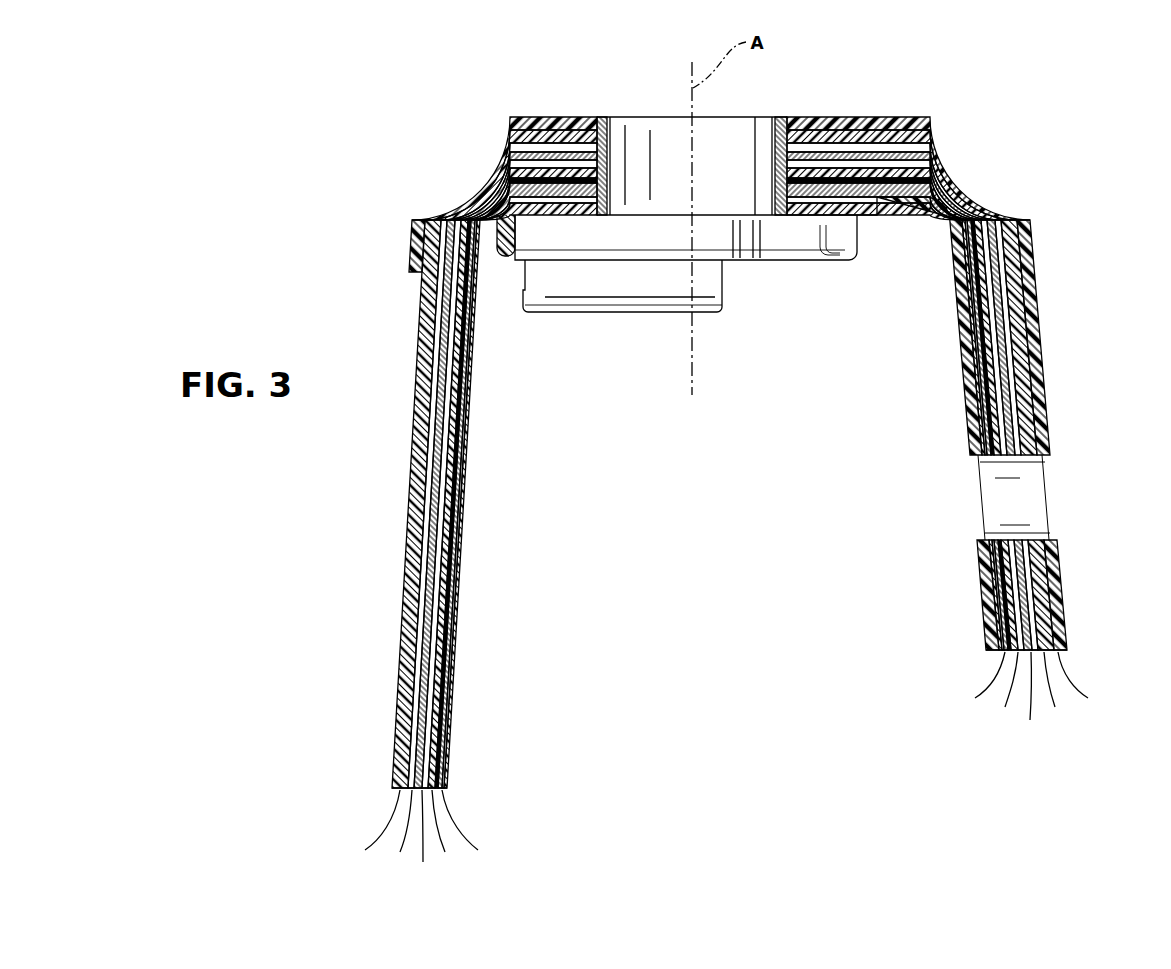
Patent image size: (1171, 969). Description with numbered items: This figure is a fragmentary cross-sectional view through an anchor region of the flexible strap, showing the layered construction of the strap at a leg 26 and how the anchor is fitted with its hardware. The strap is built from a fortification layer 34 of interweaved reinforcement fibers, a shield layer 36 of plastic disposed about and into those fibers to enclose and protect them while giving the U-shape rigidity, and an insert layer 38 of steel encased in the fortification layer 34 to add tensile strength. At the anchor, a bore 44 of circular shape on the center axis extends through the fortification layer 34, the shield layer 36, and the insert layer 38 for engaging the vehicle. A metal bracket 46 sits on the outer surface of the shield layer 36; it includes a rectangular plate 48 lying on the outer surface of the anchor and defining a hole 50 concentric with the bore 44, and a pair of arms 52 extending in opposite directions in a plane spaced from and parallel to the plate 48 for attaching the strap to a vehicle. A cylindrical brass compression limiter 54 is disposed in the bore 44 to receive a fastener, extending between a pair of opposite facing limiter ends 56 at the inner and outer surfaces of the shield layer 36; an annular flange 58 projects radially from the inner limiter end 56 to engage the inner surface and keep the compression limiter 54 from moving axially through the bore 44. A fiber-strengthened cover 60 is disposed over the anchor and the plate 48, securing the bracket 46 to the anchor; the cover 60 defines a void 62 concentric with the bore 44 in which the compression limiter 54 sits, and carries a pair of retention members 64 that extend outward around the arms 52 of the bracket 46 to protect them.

The leg 26 is at (410, 545).
The fortification layer 34 is at (724, 765).
The shield layer 36 is at (726, 759).
The insert layer 38 is at (724, 773).
The bore 44 is at (500, 120).
The bracket 46 is at (556, 318).
The plate 48 is at (840, 215).
The hole 50 is at (607, 198).
The arms 52 is at (654, 300).
The compression limiter 54 is at (766, 117).
The limiter ends 56 is at (778, 117).
The annular flange 58 is at (810, 117).
The cover 60 is at (412, 215).
The void 62 is at (596, 116).
The retention members 64 is at (805, 245).